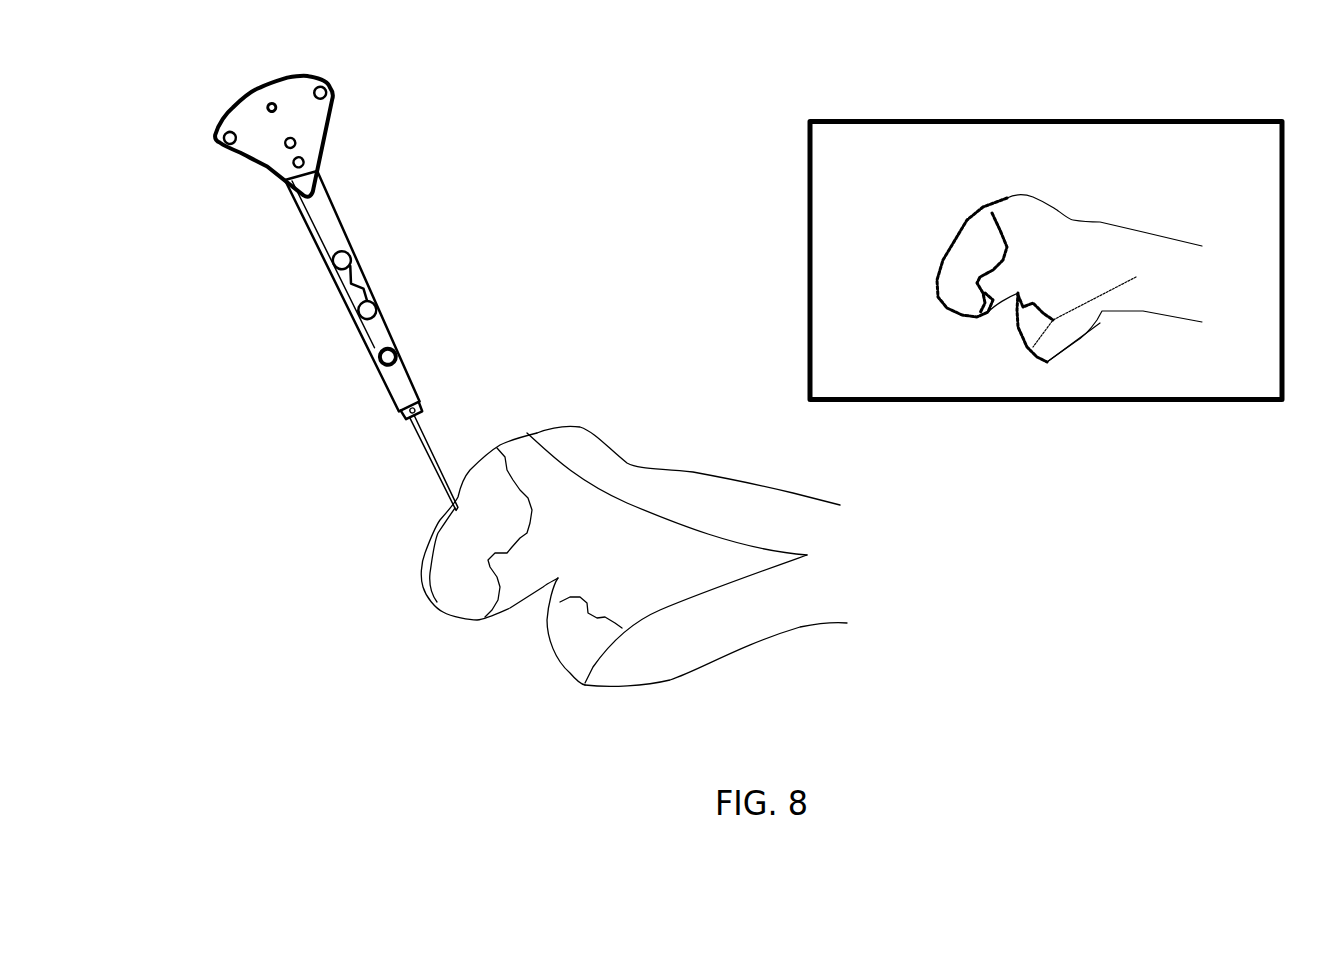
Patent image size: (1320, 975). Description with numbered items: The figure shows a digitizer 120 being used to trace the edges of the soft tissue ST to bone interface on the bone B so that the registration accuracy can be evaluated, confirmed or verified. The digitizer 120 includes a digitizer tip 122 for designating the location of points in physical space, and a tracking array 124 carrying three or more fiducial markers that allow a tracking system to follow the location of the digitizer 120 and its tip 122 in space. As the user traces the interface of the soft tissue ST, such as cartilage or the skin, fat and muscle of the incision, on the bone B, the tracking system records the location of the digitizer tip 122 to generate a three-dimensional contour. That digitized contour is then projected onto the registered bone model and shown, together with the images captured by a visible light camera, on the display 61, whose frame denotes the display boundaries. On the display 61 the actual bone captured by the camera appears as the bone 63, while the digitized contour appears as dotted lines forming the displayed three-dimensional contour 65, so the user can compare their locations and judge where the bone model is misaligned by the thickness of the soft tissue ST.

The digitizer 120 is at (405, 252).
The digitizer tip 122 is at (455, 507).
The tracking array 124 is at (211, 122).
The display 61 is at (1224, 105).
The bone 63 is at (1185, 306).
The displayed 3-D contour 65 is at (992, 213).
The soft tissue ST is at (670, 505).
The bone B is at (803, 638).